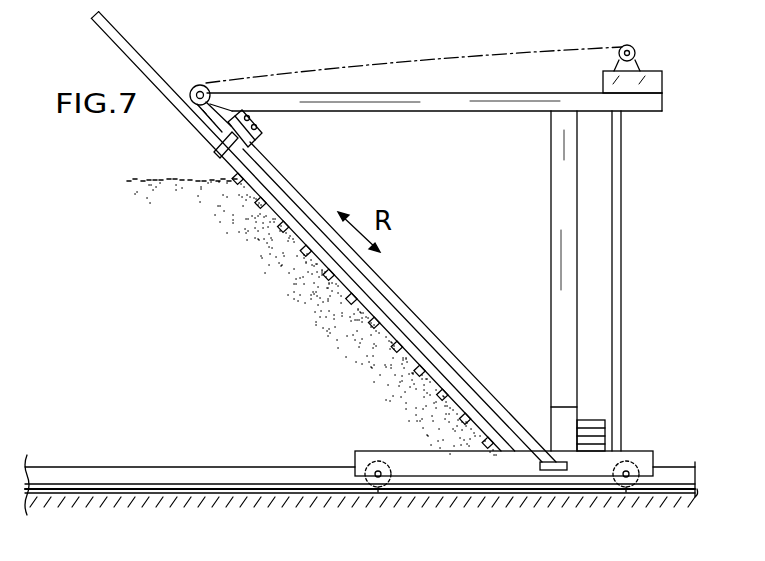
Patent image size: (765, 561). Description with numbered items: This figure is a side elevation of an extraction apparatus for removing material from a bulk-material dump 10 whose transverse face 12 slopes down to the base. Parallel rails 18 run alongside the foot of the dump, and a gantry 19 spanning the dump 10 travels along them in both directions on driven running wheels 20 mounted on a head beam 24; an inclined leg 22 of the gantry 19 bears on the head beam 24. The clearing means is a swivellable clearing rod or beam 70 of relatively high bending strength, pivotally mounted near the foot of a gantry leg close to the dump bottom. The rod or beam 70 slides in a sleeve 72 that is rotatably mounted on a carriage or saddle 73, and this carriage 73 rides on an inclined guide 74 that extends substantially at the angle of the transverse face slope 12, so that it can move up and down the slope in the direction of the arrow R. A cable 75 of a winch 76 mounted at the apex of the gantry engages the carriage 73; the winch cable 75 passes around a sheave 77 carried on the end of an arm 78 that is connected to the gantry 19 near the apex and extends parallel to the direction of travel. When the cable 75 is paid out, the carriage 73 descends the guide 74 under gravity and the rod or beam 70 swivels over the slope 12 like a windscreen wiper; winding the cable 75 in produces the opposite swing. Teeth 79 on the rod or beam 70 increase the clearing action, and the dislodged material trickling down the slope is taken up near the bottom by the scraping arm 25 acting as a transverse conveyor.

The bulk-material dump 10 is at (151, 457).
The transverse face 12 is at (290, 240).
The rails 18 is at (665, 498).
The gantry 19 is at (546, 213).
The running wheels 20 is at (378, 490).
The inclined leg 22 is at (603, 253).
The head beam 24 is at (465, 468).
The scraping arm 25 is at (605, 428).
The clearing rod or beam 70 is at (151, 66).
The sleeve 72 is at (213, 154).
The carriage or saddle 73 is at (263, 138).
The inclined guide 74 is at (398, 310).
The winch cable 75 is at (342, 67).
The winch 76 is at (636, 56).
The sheave 77 is at (202, 84).
The arm 78 is at (425, 112).
The teeth 79 is at (392, 347).